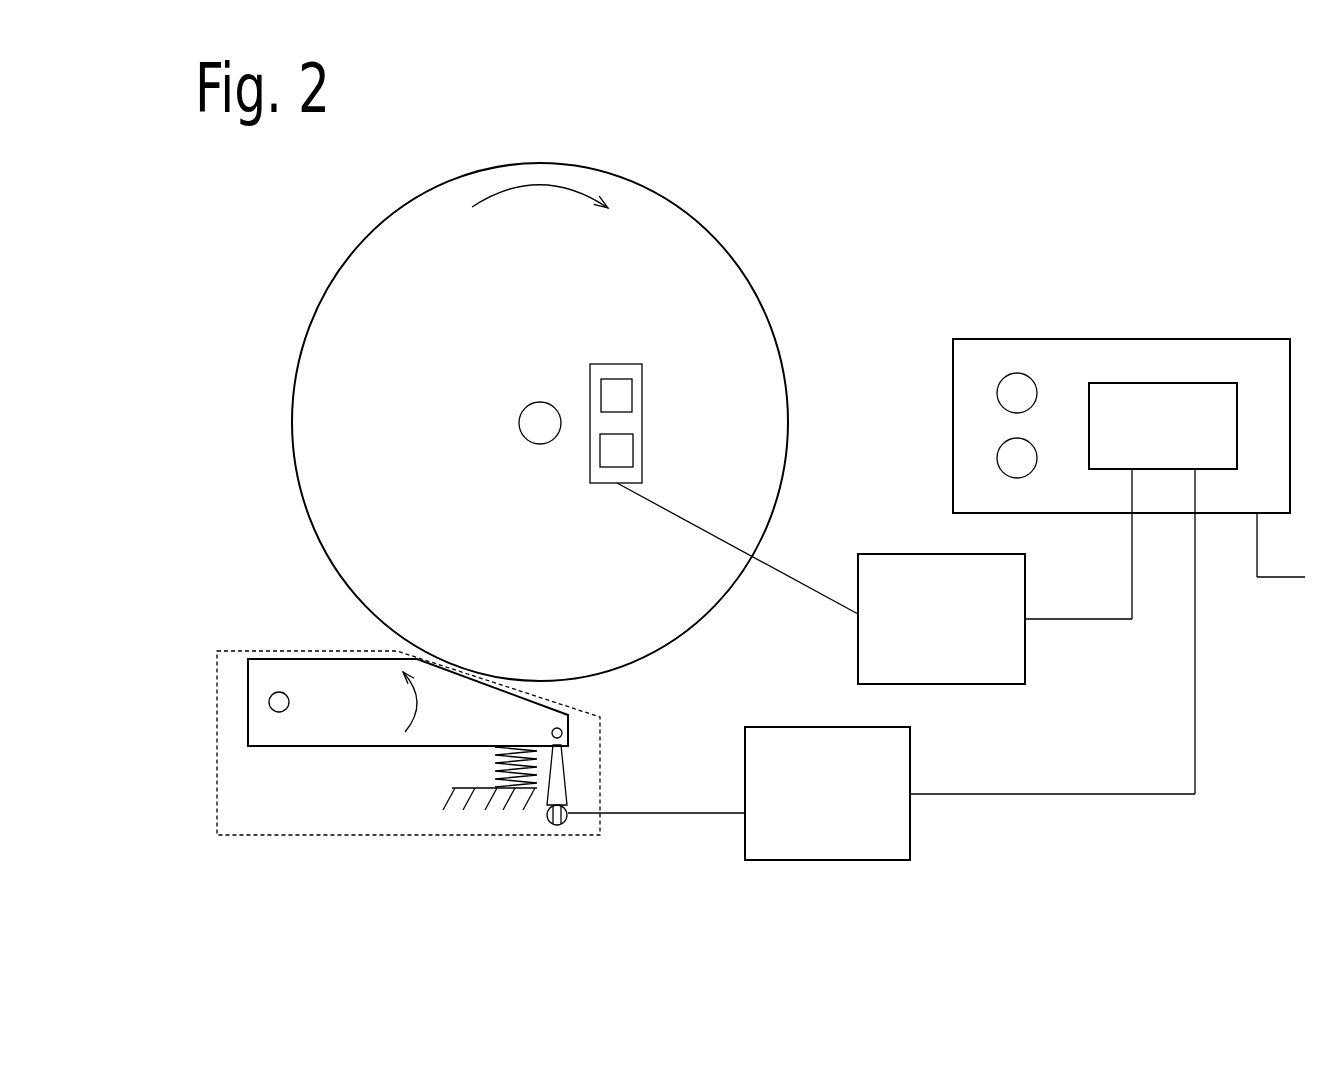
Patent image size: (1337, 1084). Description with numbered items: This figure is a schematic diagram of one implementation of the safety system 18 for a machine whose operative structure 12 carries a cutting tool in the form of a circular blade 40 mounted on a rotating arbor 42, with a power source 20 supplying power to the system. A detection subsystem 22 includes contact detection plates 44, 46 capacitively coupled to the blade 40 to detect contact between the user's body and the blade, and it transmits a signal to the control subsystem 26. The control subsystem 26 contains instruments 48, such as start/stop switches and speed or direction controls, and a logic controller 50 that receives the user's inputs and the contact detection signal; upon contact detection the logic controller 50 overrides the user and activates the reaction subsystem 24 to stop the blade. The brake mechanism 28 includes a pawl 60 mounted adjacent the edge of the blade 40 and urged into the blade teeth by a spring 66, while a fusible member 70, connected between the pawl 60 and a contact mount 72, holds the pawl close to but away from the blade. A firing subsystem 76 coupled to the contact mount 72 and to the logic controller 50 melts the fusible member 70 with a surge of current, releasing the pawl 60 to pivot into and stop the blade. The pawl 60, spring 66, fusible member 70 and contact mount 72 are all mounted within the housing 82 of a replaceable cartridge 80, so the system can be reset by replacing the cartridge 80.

The operative structure 12 is at (780, 175).
The safety system 18 is at (1112, 218).
The power source 20 is at (1330, 555).
The detection subsystem 22 is at (1003, 603).
The reaction subsystem 24 is at (876, 912).
The control subsystem 26 is at (1167, 339).
The brake mechanism 28 is at (292, 782).
The circular blade 40 is at (443, 285).
The arbor 42 is at (528, 428).
The contact detection plate 44 is at (627, 390).
The contact detection plate 46 is at (627, 445).
The instruments 48 is at (1007, 393).
The logic controller 50 is at (1213, 430).
The pawl 60 is at (305, 670).
The spring 66 is at (466, 770).
The fusible member 70 is at (567, 787).
The contact mount 72 is at (552, 823).
The firing subsystem 76 is at (888, 777).
The replaceable cartridge 80 is at (247, 879).
The housing 82 is at (317, 833).